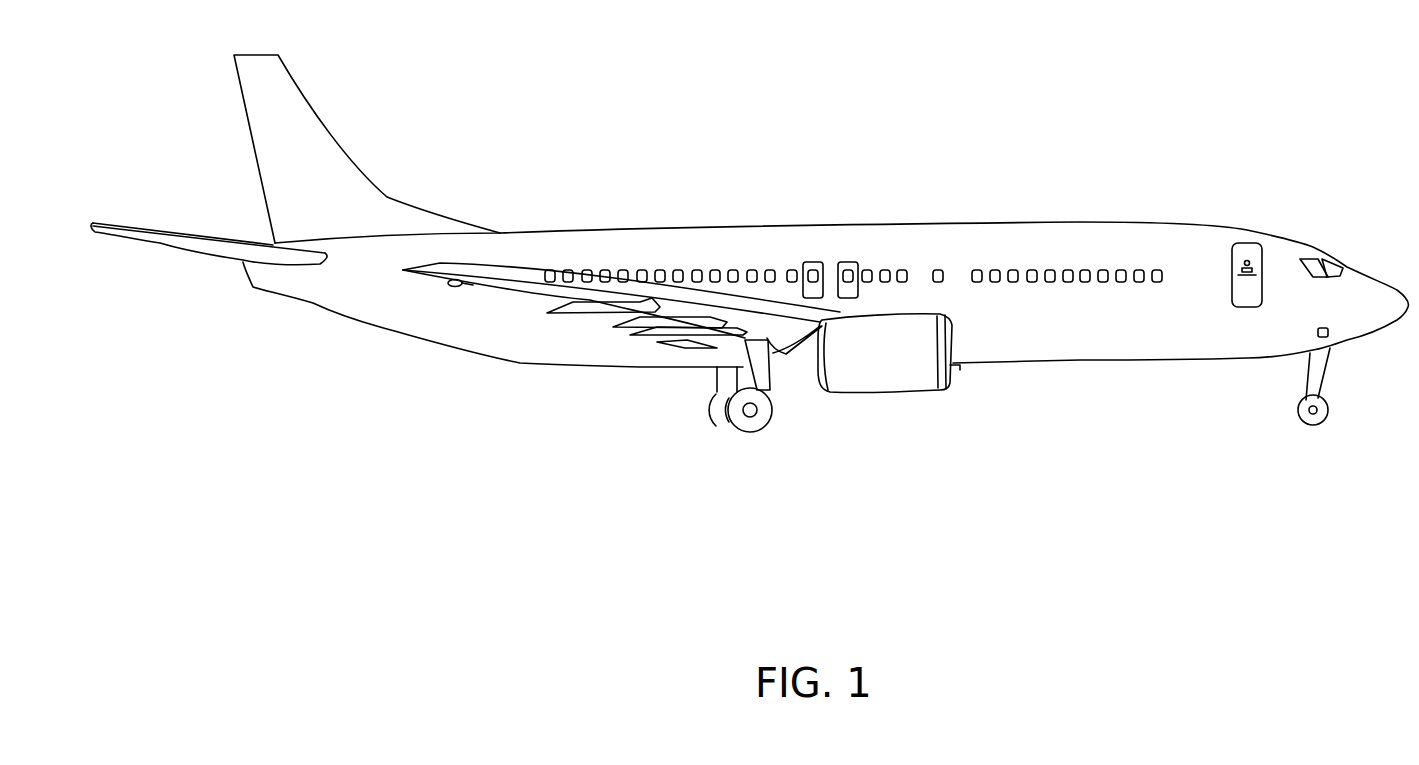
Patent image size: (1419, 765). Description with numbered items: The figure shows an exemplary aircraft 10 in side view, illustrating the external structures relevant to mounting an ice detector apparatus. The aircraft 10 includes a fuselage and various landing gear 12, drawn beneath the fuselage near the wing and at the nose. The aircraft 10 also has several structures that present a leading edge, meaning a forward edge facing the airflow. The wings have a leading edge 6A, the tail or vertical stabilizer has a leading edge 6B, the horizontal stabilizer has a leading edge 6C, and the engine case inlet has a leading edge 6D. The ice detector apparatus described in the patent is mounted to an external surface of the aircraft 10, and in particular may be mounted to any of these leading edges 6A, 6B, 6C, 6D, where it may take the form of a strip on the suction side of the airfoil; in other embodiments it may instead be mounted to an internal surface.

The aircraft 10 is at (944, 119).
The leading edge of wing 6A is at (777, 310).
The leading edge of tail/vertical stabilizer 6B is at (338, 128).
The leading edge of horizontal stabilizer 6C is at (217, 238).
The leading edge of engine case inlet 6D is at (957, 367).
The landing gear 12 is at (704, 389).